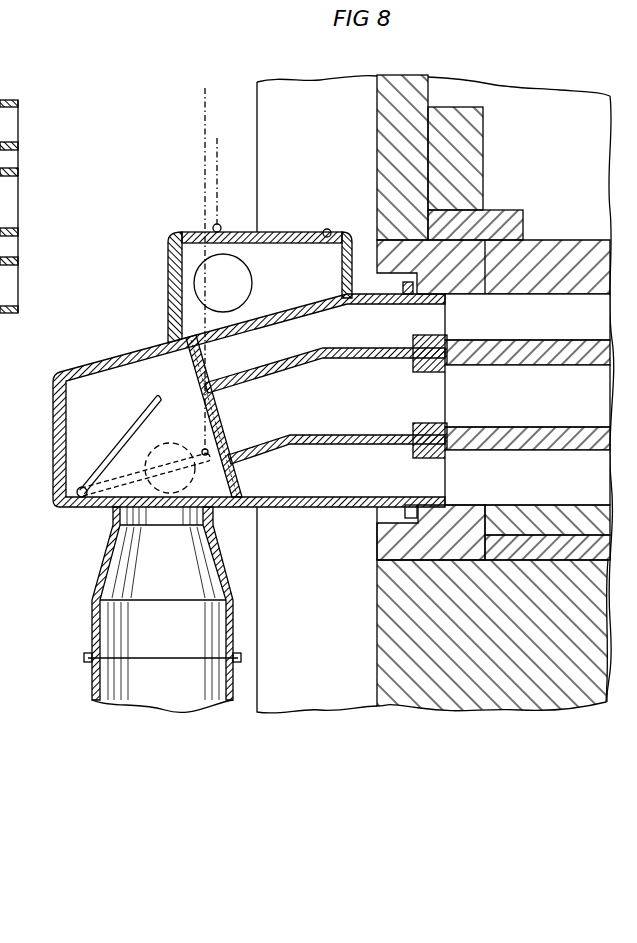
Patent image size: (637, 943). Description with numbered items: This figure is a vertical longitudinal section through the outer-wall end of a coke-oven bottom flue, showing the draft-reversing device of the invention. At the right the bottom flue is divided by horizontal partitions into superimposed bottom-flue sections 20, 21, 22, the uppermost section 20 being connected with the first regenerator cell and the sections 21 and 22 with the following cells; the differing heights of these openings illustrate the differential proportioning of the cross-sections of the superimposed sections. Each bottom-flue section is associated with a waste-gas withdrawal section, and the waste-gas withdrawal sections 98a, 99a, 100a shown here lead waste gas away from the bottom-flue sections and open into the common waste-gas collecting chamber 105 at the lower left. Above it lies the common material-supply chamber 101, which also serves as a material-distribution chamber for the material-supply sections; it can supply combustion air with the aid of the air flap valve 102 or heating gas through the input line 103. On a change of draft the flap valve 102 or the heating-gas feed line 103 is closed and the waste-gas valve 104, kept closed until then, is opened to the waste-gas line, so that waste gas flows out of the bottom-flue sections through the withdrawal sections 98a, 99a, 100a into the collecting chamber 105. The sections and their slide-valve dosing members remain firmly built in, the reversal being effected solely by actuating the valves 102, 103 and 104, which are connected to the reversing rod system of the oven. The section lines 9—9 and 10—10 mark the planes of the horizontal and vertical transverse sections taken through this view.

The section line 9— 9 is at (507, 257).
The section line 10— 10 is at (300, 123).
The bottom-flue section 20 is at (561, 337).
The bottom-flue section 21 is at (527, 407).
The bottom-flue section 22 is at (541, 486).
The waste-gas withdrawal section 98a is at (380, 484).
The waste-gas withdrawal section 99a is at (366, 420).
The waste-gas withdrawal section 100a is at (385, 337).
The material-supply chamber 101 is at (300, 286).
The flap valve 102 is at (250, 236).
The input line 103 is at (200, 283).
The waste-gas valve 104 is at (115, 452).
The waste-gas collecting chamber 105 is at (120, 375).